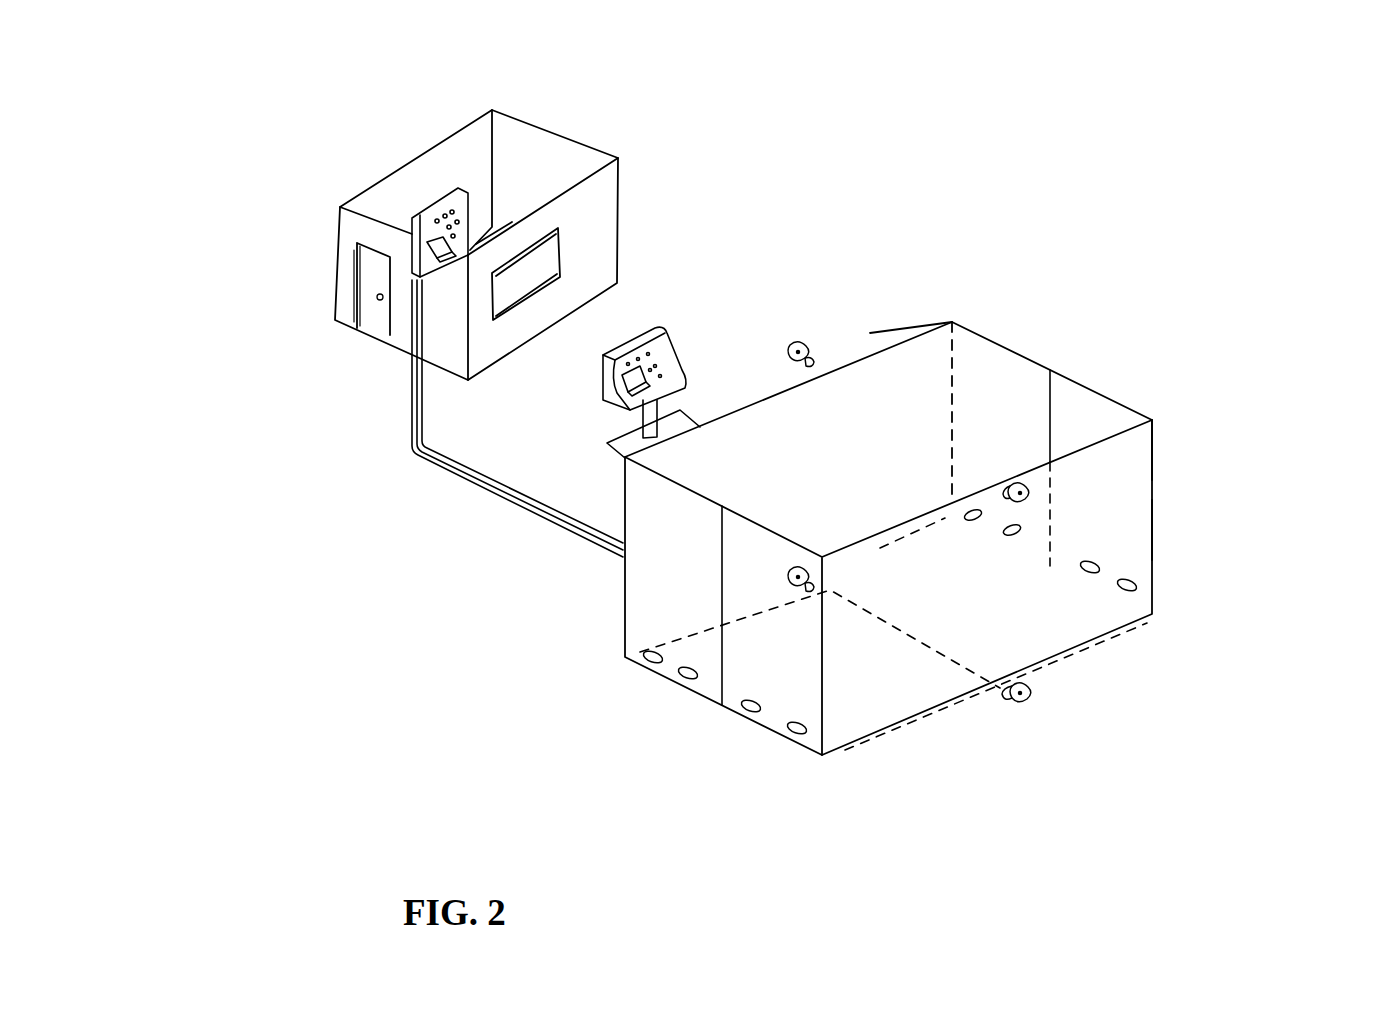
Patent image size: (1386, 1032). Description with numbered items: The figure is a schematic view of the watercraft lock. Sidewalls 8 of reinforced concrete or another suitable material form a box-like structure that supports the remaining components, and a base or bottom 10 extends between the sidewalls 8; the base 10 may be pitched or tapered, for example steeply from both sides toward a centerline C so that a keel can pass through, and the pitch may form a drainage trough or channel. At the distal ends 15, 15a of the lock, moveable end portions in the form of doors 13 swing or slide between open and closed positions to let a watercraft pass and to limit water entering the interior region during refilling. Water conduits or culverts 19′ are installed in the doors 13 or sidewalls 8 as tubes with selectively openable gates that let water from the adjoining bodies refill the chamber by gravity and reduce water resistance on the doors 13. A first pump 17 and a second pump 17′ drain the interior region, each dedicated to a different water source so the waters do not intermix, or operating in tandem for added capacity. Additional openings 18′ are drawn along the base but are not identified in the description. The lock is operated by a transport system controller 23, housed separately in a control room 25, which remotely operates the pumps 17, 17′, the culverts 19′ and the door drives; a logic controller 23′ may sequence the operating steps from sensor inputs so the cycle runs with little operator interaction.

The control room 25 is at (523, 180).
The transport system controller 23 is at (413, 227).
The logic controller 23′ is at (417, 253).
The base 10 is at (1047, 626).
The doors 13 is at (975, 387).
The distal end 15 is at (600, 645).
The distal end 15a is at (1148, 393).
The sidewalls 8 is at (897, 337).
The pump 17 is at (800, 577).
The second pump 17′ is at (1020, 493).
The culverts 19′ is at (688, 675).
The apertures 18′ is at (753, 710).
The centerline C is at (648, 750).